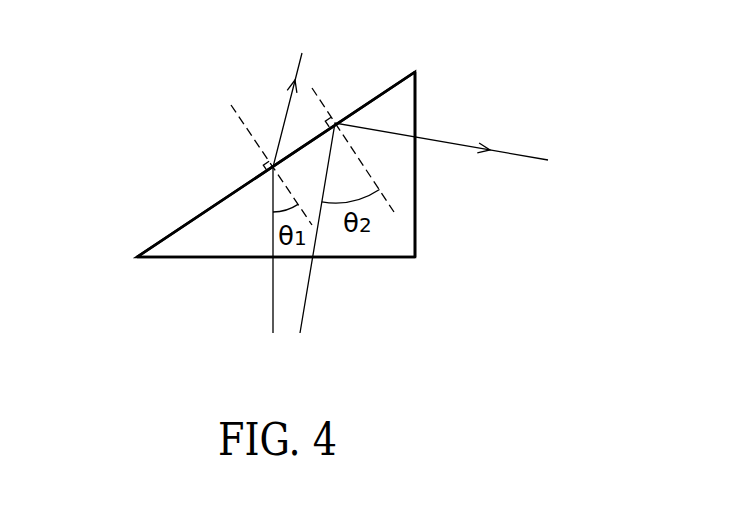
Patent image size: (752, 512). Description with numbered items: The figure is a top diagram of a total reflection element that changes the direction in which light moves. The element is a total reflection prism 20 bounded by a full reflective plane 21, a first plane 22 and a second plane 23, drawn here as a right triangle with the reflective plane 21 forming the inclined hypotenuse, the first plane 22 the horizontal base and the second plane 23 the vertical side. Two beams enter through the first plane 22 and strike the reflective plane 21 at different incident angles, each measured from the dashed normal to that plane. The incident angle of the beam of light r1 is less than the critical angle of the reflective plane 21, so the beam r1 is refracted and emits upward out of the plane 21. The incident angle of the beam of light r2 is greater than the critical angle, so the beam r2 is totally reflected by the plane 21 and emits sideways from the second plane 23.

The total reflection prism 20 is at (415, 245).
The full reflective plane 21 is at (189, 222).
The first plane 22 is at (177, 260).
The second plane 23 is at (415, 84).
The beam of light r1 is at (272, 298).
The beam of light r2 is at (308, 298).